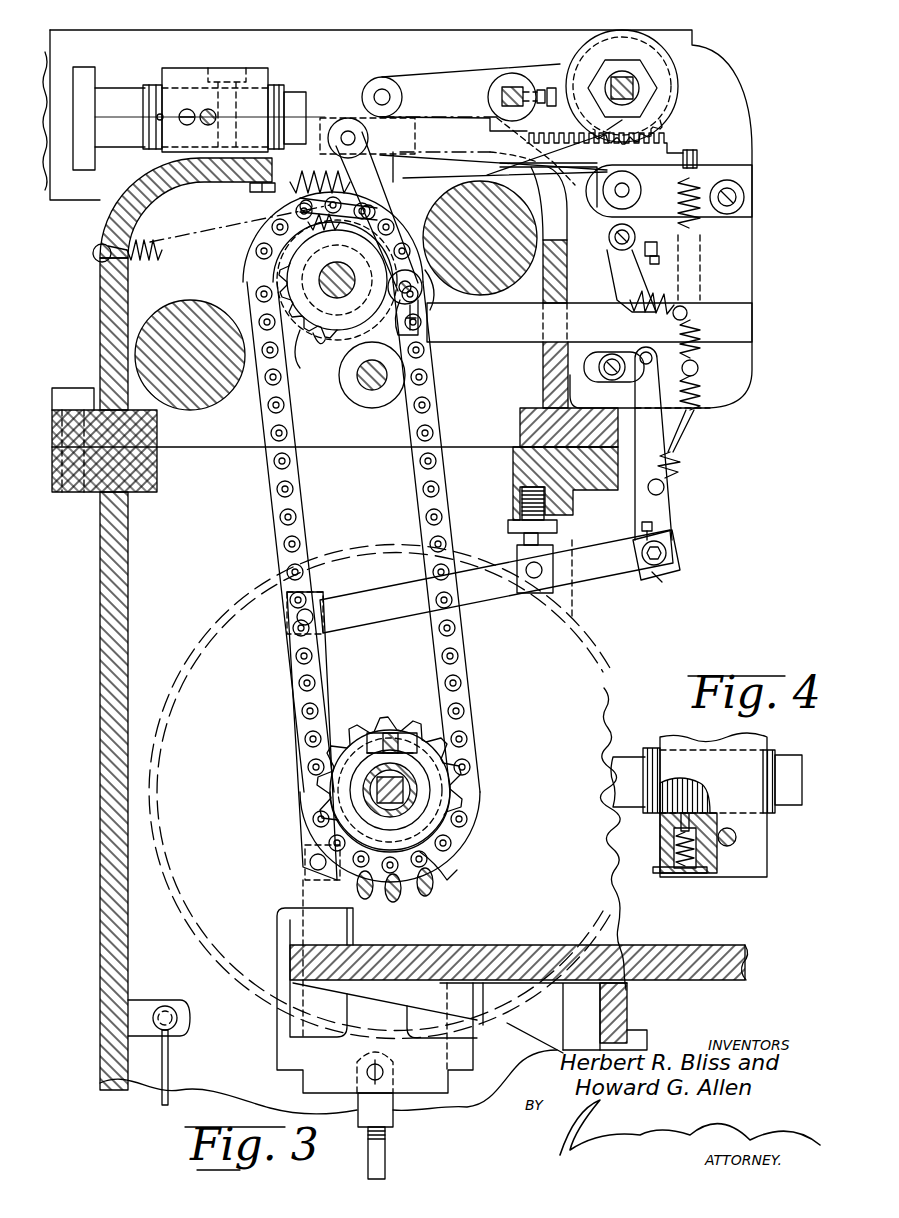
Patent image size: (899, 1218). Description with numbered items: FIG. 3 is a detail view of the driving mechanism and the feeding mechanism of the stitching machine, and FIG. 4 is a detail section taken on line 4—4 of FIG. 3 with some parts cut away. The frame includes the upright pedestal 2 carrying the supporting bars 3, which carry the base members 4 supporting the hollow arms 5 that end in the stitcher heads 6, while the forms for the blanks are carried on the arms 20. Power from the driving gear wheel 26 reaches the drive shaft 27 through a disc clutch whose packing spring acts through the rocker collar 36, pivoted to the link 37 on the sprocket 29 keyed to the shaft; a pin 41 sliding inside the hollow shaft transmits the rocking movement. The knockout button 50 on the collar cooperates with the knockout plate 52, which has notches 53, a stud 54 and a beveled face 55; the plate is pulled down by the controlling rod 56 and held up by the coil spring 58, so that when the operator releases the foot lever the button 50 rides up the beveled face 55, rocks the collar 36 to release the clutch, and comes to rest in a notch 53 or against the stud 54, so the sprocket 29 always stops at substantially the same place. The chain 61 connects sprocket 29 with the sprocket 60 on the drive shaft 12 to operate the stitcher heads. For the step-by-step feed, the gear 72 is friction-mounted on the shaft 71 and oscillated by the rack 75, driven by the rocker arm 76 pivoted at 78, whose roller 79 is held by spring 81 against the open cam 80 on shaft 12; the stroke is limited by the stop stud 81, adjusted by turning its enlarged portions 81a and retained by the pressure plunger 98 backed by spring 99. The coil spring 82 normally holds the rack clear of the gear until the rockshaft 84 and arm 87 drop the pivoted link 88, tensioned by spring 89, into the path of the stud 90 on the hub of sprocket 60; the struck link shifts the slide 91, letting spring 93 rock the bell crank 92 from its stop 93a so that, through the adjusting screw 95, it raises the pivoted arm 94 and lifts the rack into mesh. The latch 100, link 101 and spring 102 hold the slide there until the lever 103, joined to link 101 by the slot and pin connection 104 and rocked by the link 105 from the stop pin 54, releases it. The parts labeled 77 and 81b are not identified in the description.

In FIG. 3, the upright support or pedestal 2 is at (100, 647).
In FIG. 3, the supporting bars 3 is at (195, 407).
In FIG. 3, the base members 4 is at (316, 122).
In FIG. 3, the hollow arms 5 is at (621, 140).
In FIG. 3, the stitcher heads 6 is at (418, 135).
In FIG. 3, the drive shaft 12 is at (334, 295).
In FIG. 3, the arms 20 is at (213, 10).
In FIG. 3, the driving gear wheel 26 is at (612, 690).
In FIG. 3, the drive shaft 27 is at (350, 810).
In FIG. 3, the sprocket 29 is at (398, 690).
In FIG. 3, the rocker collar 36 is at (433, 803).
In FIG. 3, the link 37 is at (403, 735).
In FIG. 3, the pin 41 is at (340, 810).
In FIG. 3, the knockout button 50 is at (447, 860).
In FIG. 3, the knockout plate 52 is at (440, 898).
In FIG. 3, the notches 53 is at (445, 883).
In FIG. 3, the stud 54 is at (310, 862).
In FIG. 3, the beveled face 55 is at (440, 872).
In FIG. 3, the controlling rod 56 is at (386, 1152).
In FIG. 3, the coil spring 58 is at (172, 1073).
In FIG. 3, the sprocket 60 is at (310, 335).
In FIG. 3, the chain 61 is at (285, 513).
In FIG. 3, the shaft 71 is at (637, 88).
In FIG. 3, the gear 72 is at (653, 113).
In FIG. 3, the rack 75 is at (657, 137).
In FIG. 3, the rocker arm 76 is at (377, 197).
In FIG. 3, the roller 77 is at (610, 197).
In FIG. 3, the pivot 78 is at (372, 392).
In FIG. 3, the roller 79 is at (437, 292).
In FIG. 3, the open cam 80 is at (280, 387).
In FIG. 3, the stop stud 81 is at (290, 100).
In FIG. 4, the stop stud 81 is at (790, 757).
In FIG. 3, the enlarged portions 81a is at (80, 157).
In FIG. 3, the spring 81b is at (147, 240).
In FIG. 3, the coil spring 82 is at (700, 222).
In FIG. 3, the rockshaft 84 is at (510, 87).
In FIG. 3, the arm 87 is at (470, 77).
In FIG. 3, the pivoted link 88 is at (393, 180).
In FIG. 3, the spring 89 is at (283, 195).
In FIG. 3, the stud 90 is at (337, 280).
In FIG. 3, the slide 91 is at (522, 327).
In FIG. 3, the bell crank 92 is at (607, 257).
In FIG. 3, the spring 93 is at (667, 300).
In FIG. 3, the stop 93a is at (640, 293).
In FIG. 3, the pivoted arm 94 is at (710, 180).
In FIG. 3, the adjusting screw 95 is at (667, 247).
In FIG. 4, the pressure plunger 98 is at (677, 822).
In FIG. 4, the spring 99 is at (673, 852).
In FIG. 3, the latch 100 is at (627, 377).
In FIG. 3, the link 101 is at (660, 503).
In FIG. 3, the spring 102 is at (677, 462).
In FIG. 3, the lever 103 is at (603, 578).
In FIG. 3, the slot and pin connection 104 is at (672, 553).
In FIG. 3, the link 105 is at (290, 738).